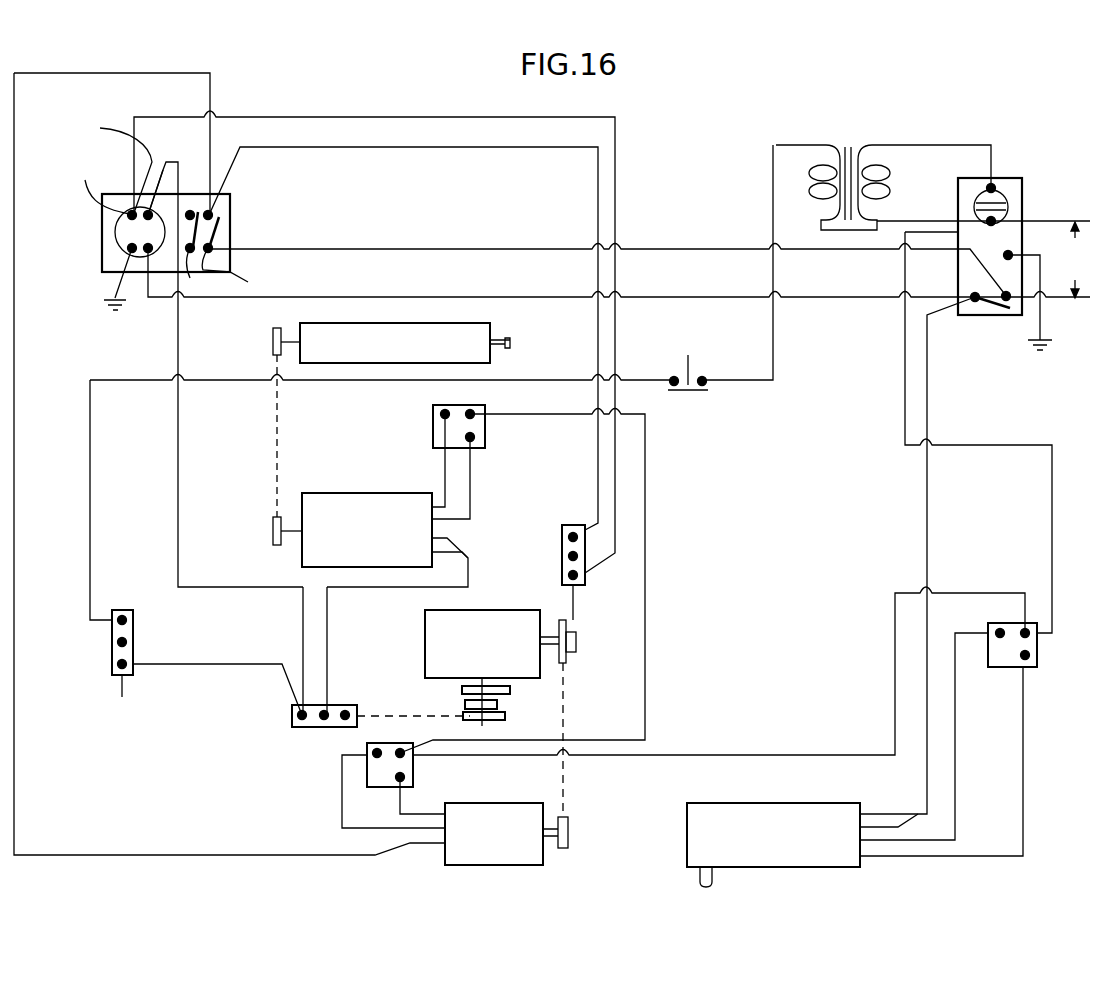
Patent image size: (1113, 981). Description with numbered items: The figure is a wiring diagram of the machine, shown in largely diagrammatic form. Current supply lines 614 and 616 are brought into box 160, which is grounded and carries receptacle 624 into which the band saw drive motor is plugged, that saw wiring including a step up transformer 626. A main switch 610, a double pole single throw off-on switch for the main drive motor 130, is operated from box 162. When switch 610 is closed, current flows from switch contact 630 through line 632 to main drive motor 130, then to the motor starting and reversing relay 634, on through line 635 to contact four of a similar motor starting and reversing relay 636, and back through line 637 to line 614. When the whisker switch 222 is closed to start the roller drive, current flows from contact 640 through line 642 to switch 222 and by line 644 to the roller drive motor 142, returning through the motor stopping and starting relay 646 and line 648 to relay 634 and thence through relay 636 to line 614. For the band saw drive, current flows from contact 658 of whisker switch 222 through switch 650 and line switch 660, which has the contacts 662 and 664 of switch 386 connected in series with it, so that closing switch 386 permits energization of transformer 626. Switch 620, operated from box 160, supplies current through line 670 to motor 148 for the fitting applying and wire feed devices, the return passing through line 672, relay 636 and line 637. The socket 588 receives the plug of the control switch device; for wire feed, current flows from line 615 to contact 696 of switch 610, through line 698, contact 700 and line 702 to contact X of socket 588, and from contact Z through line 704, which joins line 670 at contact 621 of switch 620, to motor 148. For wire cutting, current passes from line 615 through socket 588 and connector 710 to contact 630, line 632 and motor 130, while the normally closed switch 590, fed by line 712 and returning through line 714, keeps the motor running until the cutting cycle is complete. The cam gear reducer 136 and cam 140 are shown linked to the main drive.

The line 632 is at (195, 73).
The line 702 is at (107, 165).
The connector 710 is at (172, 167).
The contact 640 is at (191, 213).
The switch contact 630 is at (231, 206).
The main switch 610 is at (233, 223).
The box 162 is at (232, 238).
The contact 696 is at (231, 257).
The line 698 is at (245, 273).
The contact 700 is at (206, 272).
The socket 588 is at (100, 252).
The line 714 is at (488, 146).
The line 712 is at (618, 188).
The line 615 is at (518, 249).
The line 704 is at (550, 295).
The line 642 is at (182, 342).
The line switch 660 is at (88, 474).
The roller drive motor 142 is at (355, 492).
The motor stopping and starting relay 646 is at (487, 427).
The line 648 is at (645, 640).
The switch 590 is at (560, 537).
The line 644 is at (468, 578).
The switch 650 is at (112, 668).
The contact 658 is at (292, 720).
The whisker switch 222 is at (305, 730).
The cam gear reducer 136 is at (425, 647).
The cam 140 is at (550, 705).
The motor starting and reversing relay 634 is at (413, 775).
The line 635 is at (812, 741).
The main drive motor 130 is at (530, 856).
The switch 386 is at (696, 392).
The contact 662 is at (672, 380).
The contact 664 is at (704, 380).
The step up transformer 626 is at (900, 142).
The receptacle 624 is at (1020, 182).
The box 160 is at (1023, 205).
The current supply line 614 is at (1085, 221).
The current supply line 616 is at (1090, 300).
The switch 620 is at (993, 318).
The contact 621 is at (973, 302).
The line 670 is at (926, 560).
The line 637 is at (1052, 513).
The motor starting and reversing relay 636 is at (1037, 643).
The line 672 is at (1023, 775).
The motor 148 is at (840, 855).